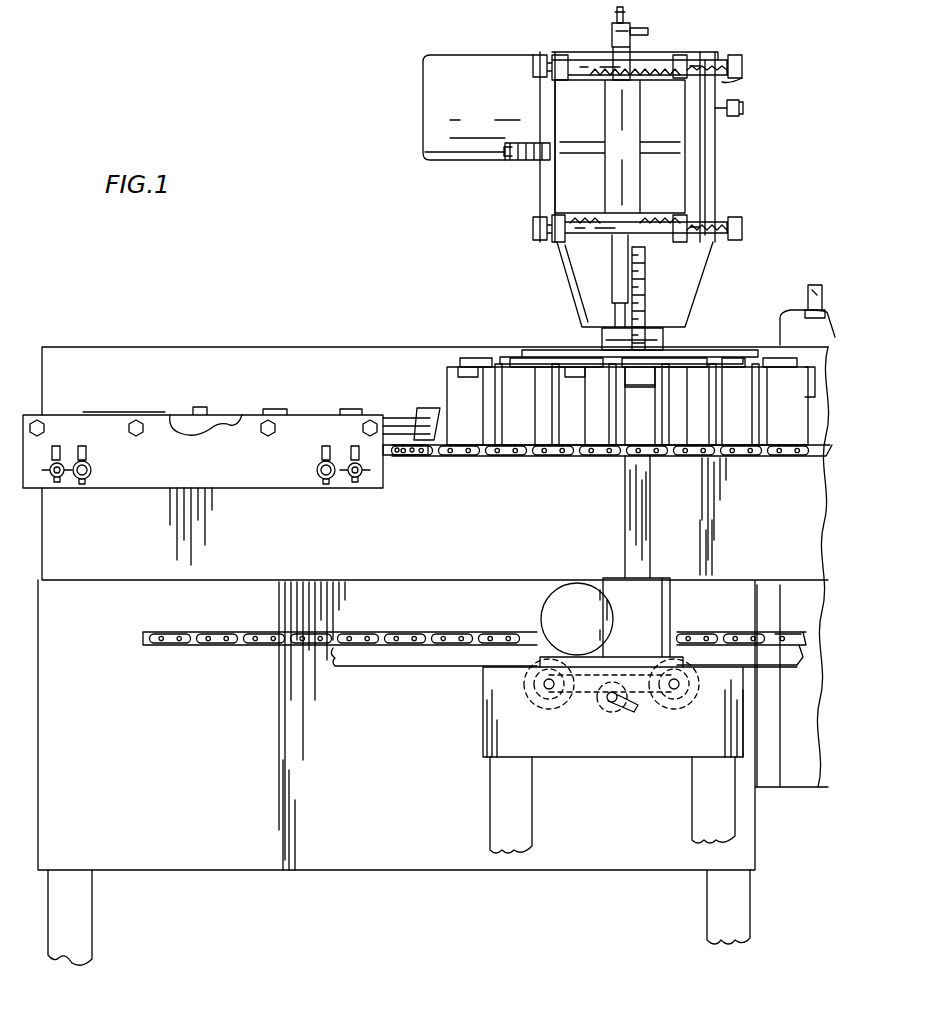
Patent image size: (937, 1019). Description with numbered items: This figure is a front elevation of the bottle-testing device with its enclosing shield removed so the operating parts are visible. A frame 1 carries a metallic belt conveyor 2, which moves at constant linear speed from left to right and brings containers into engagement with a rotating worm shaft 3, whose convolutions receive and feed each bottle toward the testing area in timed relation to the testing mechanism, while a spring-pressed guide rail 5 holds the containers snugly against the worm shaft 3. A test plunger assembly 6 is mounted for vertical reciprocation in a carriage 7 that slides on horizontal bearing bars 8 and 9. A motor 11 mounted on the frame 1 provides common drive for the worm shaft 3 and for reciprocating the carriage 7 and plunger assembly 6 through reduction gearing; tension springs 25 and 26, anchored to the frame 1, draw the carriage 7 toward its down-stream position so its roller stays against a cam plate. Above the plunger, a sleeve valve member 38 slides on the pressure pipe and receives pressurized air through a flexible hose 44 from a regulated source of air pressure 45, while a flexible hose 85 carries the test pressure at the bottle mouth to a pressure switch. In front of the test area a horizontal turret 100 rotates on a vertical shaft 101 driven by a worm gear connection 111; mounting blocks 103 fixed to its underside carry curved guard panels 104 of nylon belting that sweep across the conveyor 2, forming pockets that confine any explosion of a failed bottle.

The frame 1 is at (781, 510).
The metallic belt conveyor 2 is at (540, 456).
The rotating worm shaft 3 is at (238, 382).
The spring-pressed guide rail 5 is at (400, 452).
The test plunger assembly 6 is at (616, 268).
The carriage 7 is at (565, 184).
The horizontal bearing bar 8 is at (660, 60).
The horizontal bearing bar 9 is at (585, 235).
The motor 11 is at (478, 36).
The tension spring 25 is at (728, 80).
The tension spring 26 is at (700, 235).
The sleeve valve member 38 is at (612, 38).
The flexible hose 44 is at (645, 36).
The regulated source of air pressure 45 is at (788, 310).
The flexible hose 85 is at (612, 15).
The horizontal turret 100 is at (536, 363).
The vertical shaft 101 is at (652, 265).
The mounting block 103 is at (510, 365).
The curved guard flap or panel 104 is at (515, 425).
The worm gear connection 111 is at (648, 605).